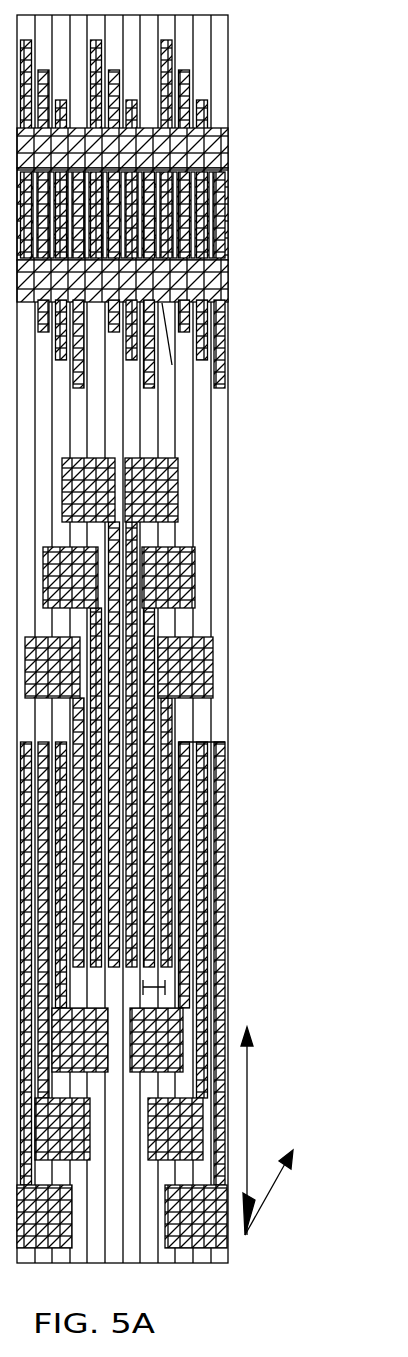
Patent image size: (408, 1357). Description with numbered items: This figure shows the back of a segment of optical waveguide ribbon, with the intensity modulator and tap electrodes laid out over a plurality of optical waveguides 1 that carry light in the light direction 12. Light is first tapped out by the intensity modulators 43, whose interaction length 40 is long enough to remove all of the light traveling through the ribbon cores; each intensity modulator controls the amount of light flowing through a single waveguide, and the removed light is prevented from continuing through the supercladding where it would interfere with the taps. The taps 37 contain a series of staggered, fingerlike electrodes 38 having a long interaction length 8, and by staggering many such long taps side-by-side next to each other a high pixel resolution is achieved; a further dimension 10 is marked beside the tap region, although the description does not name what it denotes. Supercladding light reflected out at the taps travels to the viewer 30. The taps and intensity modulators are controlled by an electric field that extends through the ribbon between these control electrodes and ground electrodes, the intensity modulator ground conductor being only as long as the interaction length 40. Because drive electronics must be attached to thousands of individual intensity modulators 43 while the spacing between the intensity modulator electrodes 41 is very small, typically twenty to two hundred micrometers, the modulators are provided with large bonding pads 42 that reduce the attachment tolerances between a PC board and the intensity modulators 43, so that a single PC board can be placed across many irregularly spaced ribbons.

The optical waveguides 1 is at (205, 453).
The interaction length 8 is at (258, 336).
The insulating layer 10 is at (249, 387).
The light direction 12 is at (256, 1099).
The viewer 30 is at (274, 1197).
The taps 37 is at (172, 365).
The fingerlike electrodes 38 is at (165, 48).
The interaction length 40 is at (233, 742).
The spacing between the intensity modulator electrodes 41 is at (165, 987).
The bonding pads 42 is at (167, 485).
The intensity modulators 43 is at (205, 738).